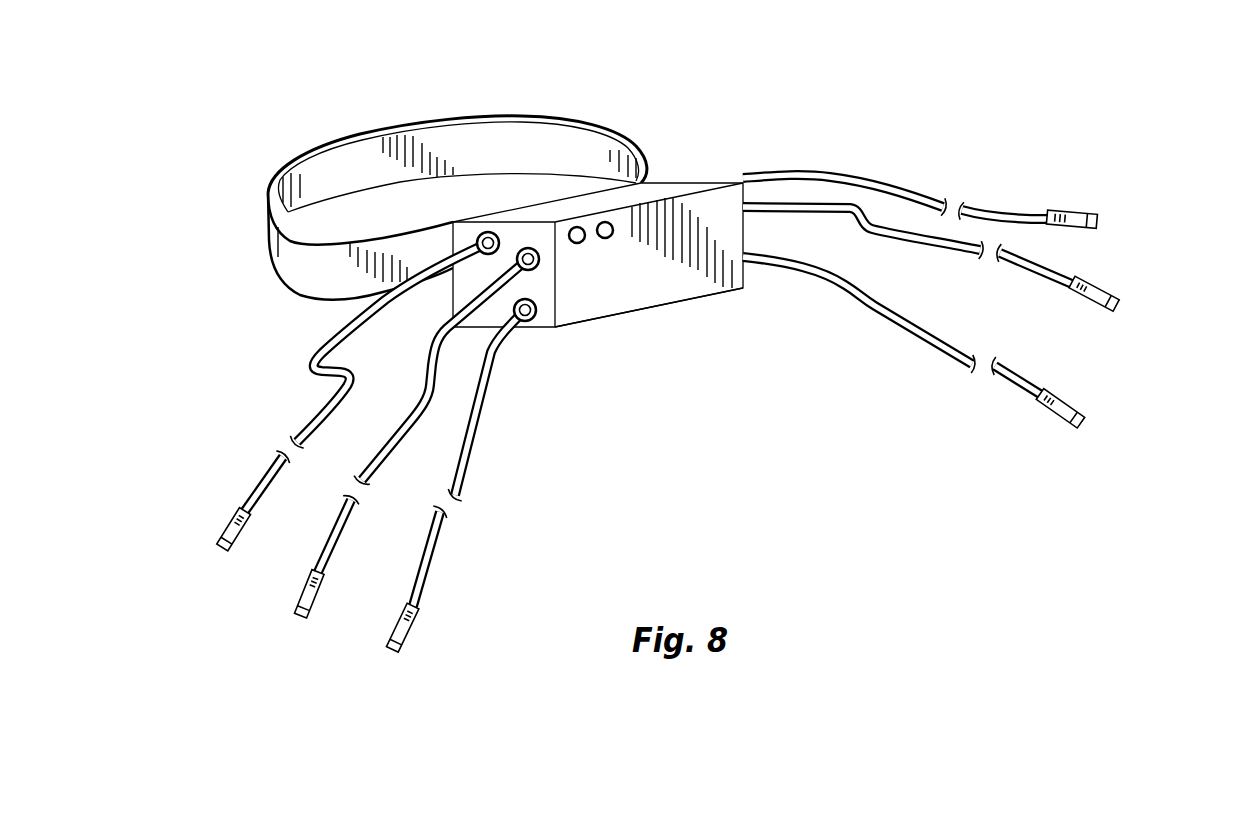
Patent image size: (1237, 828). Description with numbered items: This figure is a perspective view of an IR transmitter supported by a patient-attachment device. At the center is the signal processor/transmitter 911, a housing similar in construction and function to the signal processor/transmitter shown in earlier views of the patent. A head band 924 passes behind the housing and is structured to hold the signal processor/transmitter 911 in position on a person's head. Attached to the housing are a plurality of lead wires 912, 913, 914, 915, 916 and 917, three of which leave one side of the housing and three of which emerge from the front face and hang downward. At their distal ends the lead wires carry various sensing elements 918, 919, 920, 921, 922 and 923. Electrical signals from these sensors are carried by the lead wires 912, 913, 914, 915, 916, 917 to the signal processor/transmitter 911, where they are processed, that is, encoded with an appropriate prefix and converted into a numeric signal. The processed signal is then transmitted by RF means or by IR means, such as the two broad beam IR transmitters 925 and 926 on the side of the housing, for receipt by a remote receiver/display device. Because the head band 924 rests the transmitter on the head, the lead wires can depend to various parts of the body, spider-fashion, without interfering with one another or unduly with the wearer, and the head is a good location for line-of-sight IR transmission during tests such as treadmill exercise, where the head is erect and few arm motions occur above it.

The signal processor/transmitter 911 is at (670, 288).
The lead wire 912 is at (857, 178).
The lead wire 913 is at (1053, 265).
The lead wire 914 is at (925, 330).
The lead wire 915 is at (480, 433).
The lead wire 916 is at (323, 543).
The lead wire 917 is at (307, 407).
The sensing element 918 is at (1090, 210).
The sensing element 919 is at (1117, 298).
The sensing element 920 is at (1087, 412).
The sensing element 921 is at (222, 528).
The sensing element 922 is at (323, 597).
The sensing element 923 is at (413, 630).
The head band 924 is at (565, 122).
The broad beam IR transmitter 925 is at (577, 244).
The broad beam IR transmitter 926 is at (605, 237).